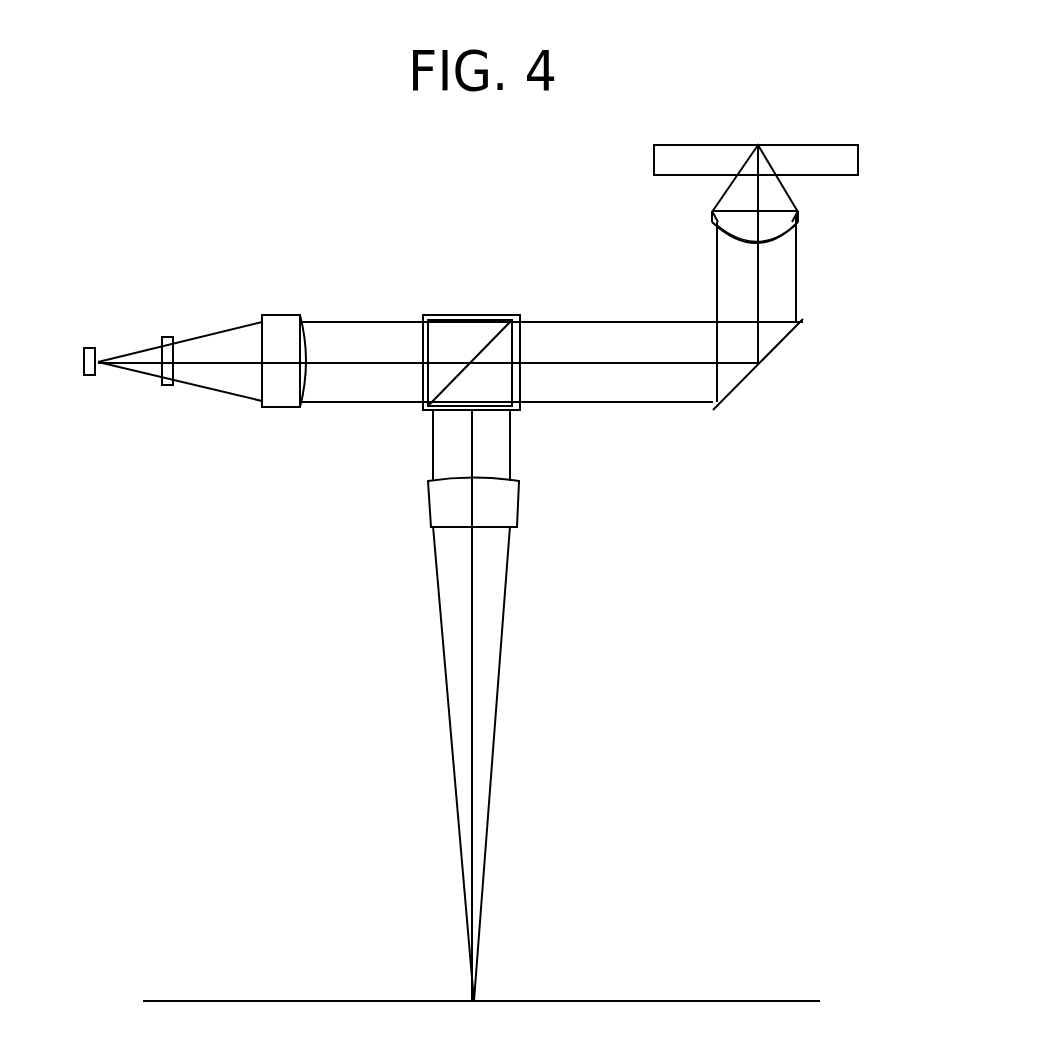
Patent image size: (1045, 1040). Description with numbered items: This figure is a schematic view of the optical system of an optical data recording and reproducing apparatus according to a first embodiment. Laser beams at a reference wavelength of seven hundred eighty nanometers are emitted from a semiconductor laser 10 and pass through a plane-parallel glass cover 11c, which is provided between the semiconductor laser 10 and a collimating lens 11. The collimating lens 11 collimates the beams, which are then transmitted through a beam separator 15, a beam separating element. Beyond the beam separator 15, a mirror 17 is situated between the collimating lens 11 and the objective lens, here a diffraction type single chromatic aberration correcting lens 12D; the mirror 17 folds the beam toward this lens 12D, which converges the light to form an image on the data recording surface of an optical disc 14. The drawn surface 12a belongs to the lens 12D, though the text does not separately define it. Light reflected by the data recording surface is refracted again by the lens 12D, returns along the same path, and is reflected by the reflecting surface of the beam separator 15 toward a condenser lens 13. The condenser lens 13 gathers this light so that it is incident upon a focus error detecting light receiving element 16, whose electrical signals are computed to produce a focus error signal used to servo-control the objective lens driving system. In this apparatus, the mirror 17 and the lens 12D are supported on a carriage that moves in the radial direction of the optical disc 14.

The semiconductor laser 10 is at (94, 345).
The plane-parallel glass cover 11c is at (170, 387).
The collimating lens 11 is at (278, 388).
The beam separator 15 is at (497, 313).
The condenser lens 13 is at (520, 508).
The focus error detecting light receiving element 16 is at (637, 1001).
The mirror 17 is at (782, 342).
The optical disc 14 is at (850, 166).
The diffraction type single chromatic aberration correcting lens 12D is at (777, 221).
The lens surface 12a is at (730, 240).